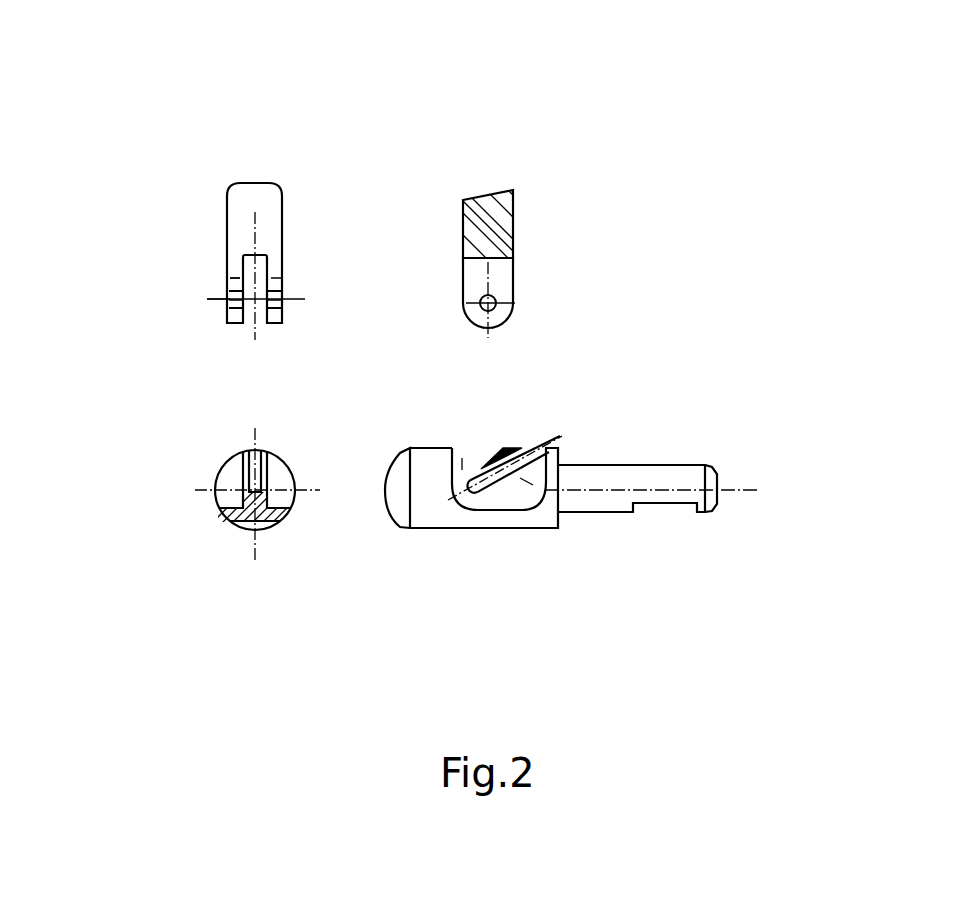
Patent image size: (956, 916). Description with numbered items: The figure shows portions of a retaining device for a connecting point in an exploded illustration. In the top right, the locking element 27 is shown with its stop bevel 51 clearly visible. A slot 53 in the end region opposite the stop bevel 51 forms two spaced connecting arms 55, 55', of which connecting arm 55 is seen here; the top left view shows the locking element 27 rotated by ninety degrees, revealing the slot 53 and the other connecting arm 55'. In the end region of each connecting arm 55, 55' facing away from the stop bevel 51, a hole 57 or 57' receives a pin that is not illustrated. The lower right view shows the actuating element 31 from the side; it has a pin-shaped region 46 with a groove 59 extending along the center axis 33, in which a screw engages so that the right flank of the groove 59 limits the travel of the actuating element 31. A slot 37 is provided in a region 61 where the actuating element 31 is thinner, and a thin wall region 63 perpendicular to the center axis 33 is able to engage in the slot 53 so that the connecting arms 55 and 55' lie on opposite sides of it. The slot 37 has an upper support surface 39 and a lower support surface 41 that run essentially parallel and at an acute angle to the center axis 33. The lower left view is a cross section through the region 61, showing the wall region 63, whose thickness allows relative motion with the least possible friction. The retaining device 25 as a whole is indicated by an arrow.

The connecting element 25 is at (655, 198).
The locking element 27 is at (187, 201).
The actuating element 31 is at (714, 448).
The center axis 33 is at (740, 492).
The slot 37 is at (527, 452).
The upper support surface 39 is at (484, 460).
The lower support surface 41 is at (527, 484).
The pin-shaped region 46 is at (622, 465).
The stop bevel 51 is at (495, 195).
The slot 53 is at (249, 337).
The connecting arm 55 is at (462, 266).
The connecting arm 55' is at (153, 266).
The hole 57 is at (424, 360).
The hole 57' is at (145, 329).
The groove 59 is at (650, 512).
The region 61 is at (503, 504).
The wall region 63 is at (222, 470).